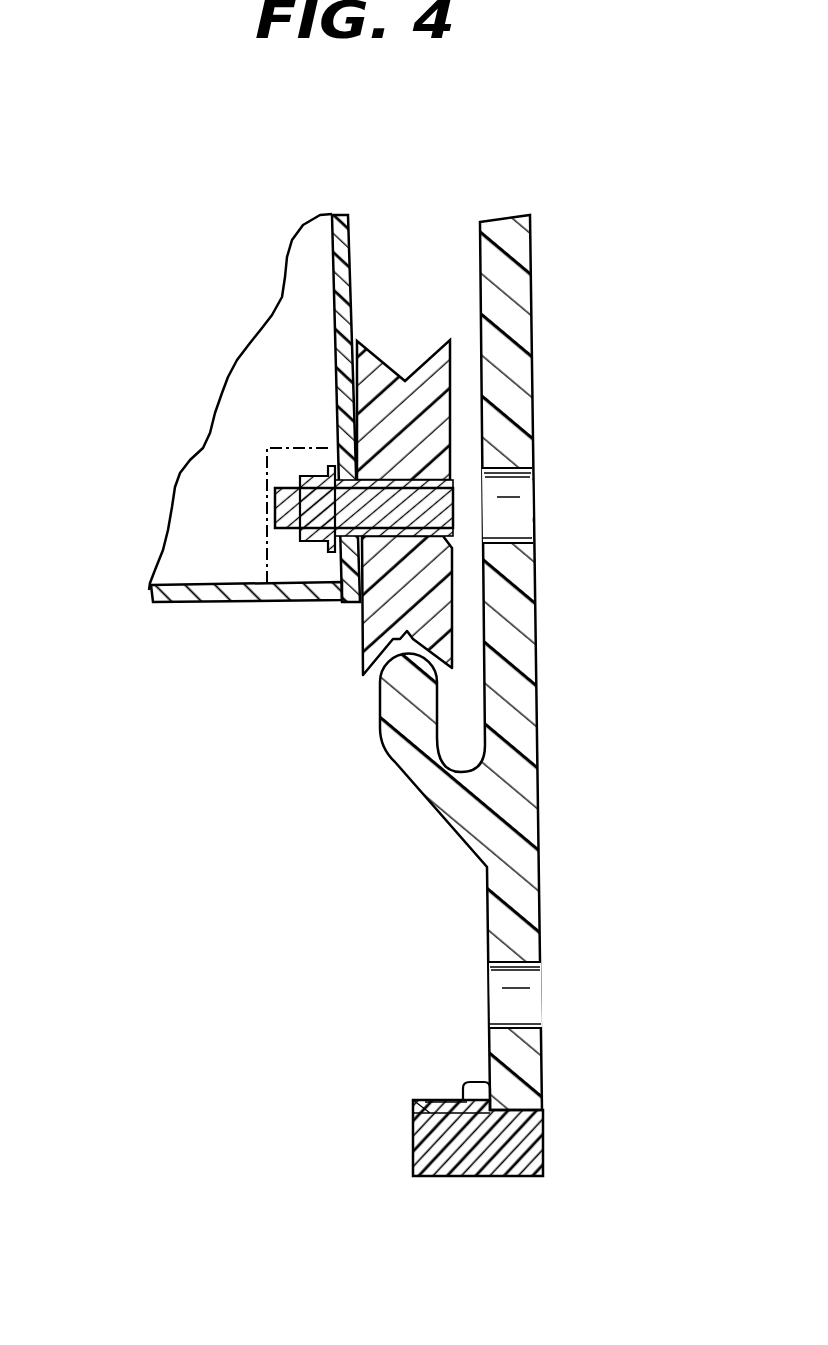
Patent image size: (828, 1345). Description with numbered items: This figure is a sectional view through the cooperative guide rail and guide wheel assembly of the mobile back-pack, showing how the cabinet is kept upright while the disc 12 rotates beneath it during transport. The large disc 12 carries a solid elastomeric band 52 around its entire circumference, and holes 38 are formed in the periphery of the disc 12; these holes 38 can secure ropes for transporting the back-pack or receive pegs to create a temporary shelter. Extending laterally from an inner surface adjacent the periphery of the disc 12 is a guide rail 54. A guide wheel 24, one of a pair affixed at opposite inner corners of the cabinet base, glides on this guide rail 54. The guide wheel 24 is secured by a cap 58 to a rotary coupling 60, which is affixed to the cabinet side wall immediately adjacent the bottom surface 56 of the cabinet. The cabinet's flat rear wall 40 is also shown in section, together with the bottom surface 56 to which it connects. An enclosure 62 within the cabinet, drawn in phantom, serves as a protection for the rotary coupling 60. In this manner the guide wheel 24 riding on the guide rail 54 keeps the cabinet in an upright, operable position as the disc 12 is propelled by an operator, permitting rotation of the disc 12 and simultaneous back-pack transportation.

The disc 12 is at (523, 342).
The guide wheels 24 is at (420, 397).
The holes 38 is at (532, 1003).
The rear wall 40 is at (354, 269).
The solid elastomeric band 52 is at (497, 1172).
The guide rail 54 is at (392, 638).
The bottom surface 56 is at (186, 603).
The cap 58 is at (450, 507).
The rotary coupling 60 is at (288, 498).
The enclosure 62 is at (267, 537).